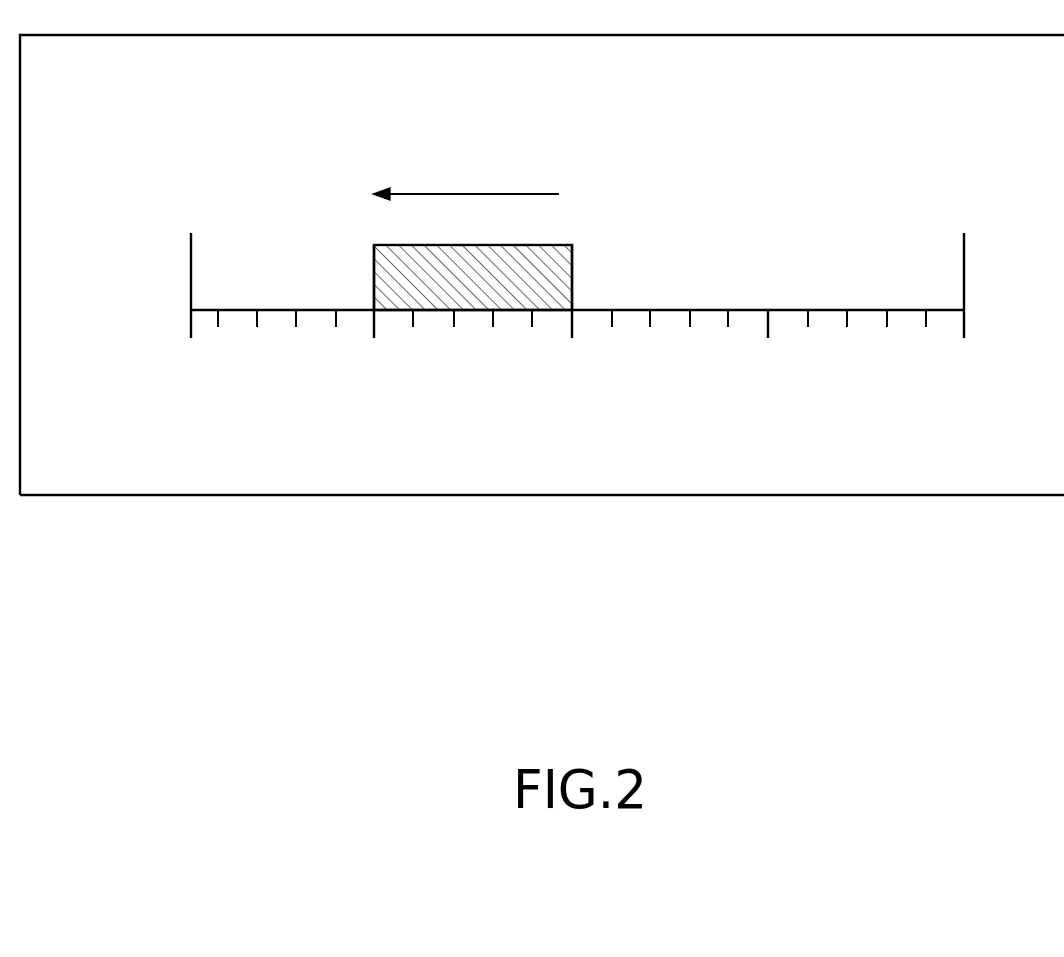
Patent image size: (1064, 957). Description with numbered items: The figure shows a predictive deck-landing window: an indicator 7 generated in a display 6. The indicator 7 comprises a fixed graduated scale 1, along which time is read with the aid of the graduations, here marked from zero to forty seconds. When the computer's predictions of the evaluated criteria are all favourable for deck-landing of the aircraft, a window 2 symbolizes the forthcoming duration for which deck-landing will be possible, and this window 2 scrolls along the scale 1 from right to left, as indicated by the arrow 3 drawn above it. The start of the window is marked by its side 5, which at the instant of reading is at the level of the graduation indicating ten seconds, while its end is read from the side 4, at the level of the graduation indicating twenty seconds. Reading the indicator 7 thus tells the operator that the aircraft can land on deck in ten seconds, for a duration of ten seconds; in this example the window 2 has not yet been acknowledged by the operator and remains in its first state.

The fixed graduated scale 1 is at (668, 335).
The window 2 is at (483, 295).
The movement direction arrow 3 is at (473, 186).
The side of the window 4 is at (576, 260).
The side of the window 5 is at (374, 290).
The display 6 is at (937, 463).
The indicator 7 is at (779, 195).